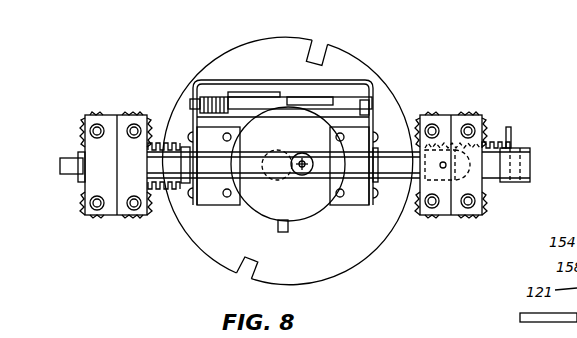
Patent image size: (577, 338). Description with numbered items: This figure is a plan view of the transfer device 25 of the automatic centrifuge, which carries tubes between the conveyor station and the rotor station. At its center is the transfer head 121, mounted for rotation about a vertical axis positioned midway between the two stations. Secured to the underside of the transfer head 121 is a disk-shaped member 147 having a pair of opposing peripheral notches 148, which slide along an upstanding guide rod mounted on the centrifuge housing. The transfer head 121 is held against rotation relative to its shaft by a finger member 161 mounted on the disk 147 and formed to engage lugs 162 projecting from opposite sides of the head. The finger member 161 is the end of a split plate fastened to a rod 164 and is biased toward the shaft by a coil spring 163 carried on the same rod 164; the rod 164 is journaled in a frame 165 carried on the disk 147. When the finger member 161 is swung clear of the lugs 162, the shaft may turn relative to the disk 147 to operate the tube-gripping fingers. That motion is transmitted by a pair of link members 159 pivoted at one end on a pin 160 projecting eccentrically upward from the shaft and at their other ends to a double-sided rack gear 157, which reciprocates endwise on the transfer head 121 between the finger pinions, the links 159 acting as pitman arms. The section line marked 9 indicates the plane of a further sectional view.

The disk-shaped member 147 is at (376, 243).
The peripheral notches 148 is at (323, 48).
The transfer head 121 is at (374, 73).
The link members 159 is at (238, 153).
The pin 160 is at (317, 142).
The finger member 161 is at (258, 90).
The lugs 162 is at (303, 97).
The coil spring 163 is at (213, 94).
The rod 164 is at (163, 142).
The frame 165 is at (374, 118).
The double-sided rack gear 157 is at (494, 188).
The transfer device 25 is at (183, 264).
The section line 9- 9 is at (50, 215).